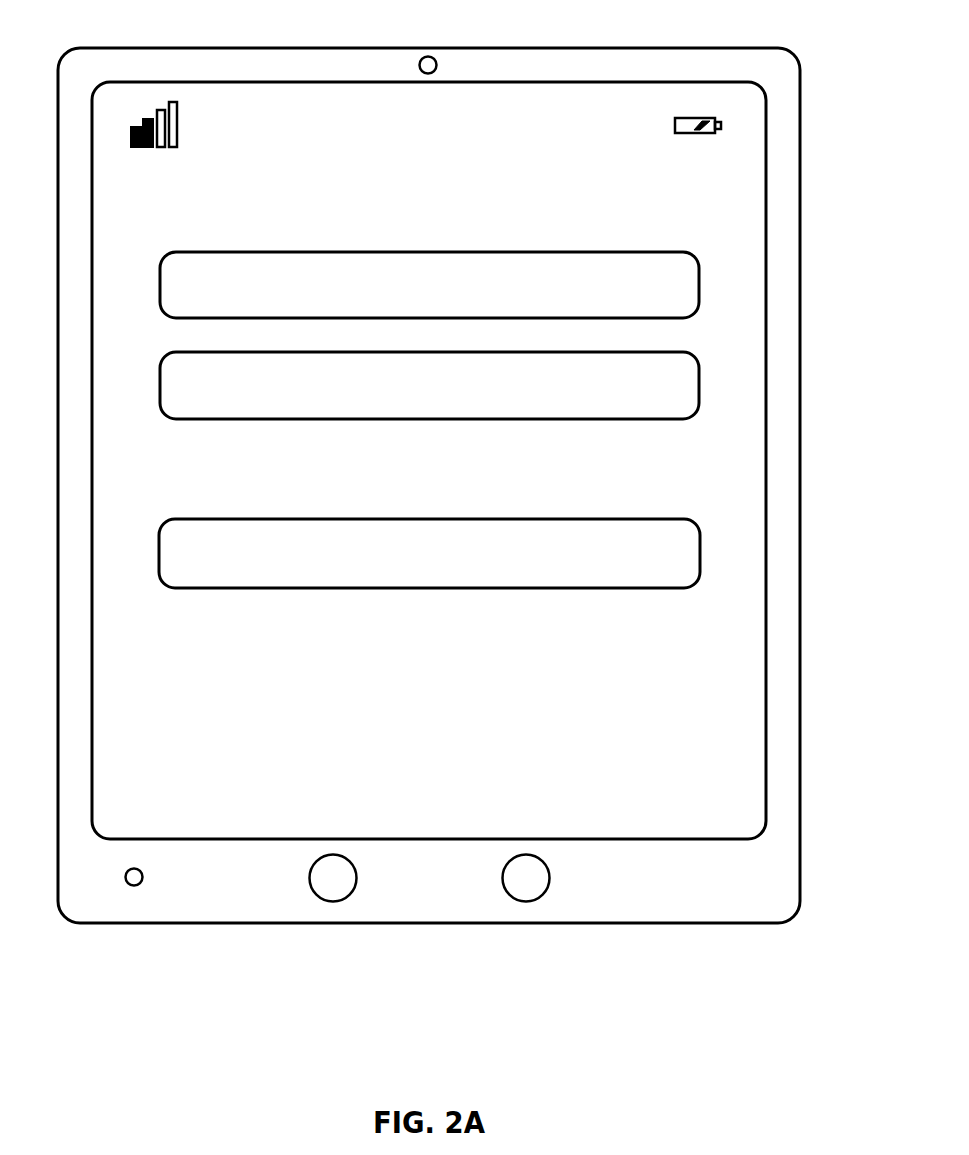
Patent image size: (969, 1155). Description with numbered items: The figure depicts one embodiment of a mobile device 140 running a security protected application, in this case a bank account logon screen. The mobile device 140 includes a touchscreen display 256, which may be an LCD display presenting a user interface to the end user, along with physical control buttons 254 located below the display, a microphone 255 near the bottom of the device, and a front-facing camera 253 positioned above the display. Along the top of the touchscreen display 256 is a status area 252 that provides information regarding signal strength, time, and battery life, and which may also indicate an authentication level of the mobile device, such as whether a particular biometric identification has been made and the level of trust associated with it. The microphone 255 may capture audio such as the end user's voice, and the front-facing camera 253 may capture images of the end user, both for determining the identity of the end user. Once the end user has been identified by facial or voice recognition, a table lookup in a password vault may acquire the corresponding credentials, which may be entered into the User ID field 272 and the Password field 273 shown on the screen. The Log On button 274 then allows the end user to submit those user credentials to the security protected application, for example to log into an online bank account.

The mobile device 140 is at (520, 1001).
The status area 252 is at (808, 103).
The front-facing camera 253 is at (428, 55).
The physical control buttons 254 is at (808, 855).
The microphone 255 is at (144, 871).
The touchscreen display 256 is at (748, 821).
The User ID field 272 is at (689, 294).
The Password field 273 is at (689, 394).
The Log On button 274 is at (690, 562).